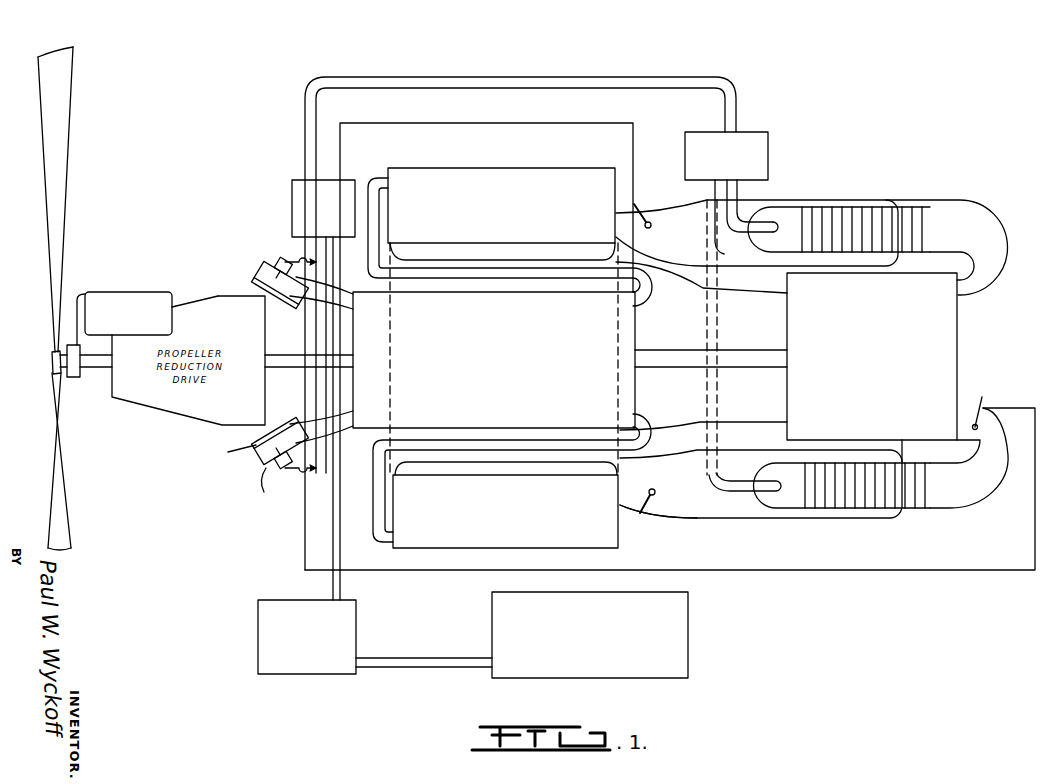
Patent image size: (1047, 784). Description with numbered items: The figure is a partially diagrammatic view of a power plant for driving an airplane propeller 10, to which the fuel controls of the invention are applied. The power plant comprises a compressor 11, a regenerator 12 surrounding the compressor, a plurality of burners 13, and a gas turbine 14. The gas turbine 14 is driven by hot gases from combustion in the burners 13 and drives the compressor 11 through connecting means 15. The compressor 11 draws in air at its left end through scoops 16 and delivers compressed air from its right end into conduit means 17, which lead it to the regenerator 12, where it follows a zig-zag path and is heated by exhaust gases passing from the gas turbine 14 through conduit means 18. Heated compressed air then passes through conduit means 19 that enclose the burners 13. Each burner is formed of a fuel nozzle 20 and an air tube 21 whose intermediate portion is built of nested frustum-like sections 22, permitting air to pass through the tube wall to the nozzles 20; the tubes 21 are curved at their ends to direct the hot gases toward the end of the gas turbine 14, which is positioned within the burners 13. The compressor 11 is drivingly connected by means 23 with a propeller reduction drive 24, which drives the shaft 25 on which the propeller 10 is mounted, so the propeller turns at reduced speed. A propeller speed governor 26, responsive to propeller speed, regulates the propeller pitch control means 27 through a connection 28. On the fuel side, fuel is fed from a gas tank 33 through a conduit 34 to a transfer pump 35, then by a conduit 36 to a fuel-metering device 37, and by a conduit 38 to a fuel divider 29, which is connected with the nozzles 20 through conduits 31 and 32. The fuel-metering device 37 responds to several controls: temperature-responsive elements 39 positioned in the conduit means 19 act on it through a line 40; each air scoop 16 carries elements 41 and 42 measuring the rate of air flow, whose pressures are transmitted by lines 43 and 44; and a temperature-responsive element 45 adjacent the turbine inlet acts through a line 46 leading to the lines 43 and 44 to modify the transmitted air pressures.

The airplane propeller 10 is at (55, 425).
The compressor 11 is at (636, 327).
The regenerator 12 is at (534, 168).
The burners 13 is at (812, 360).
The gas turbine 14 is at (958, 318).
The connecting means 15 is at (742, 369).
The air scoops 16 is at (262, 275).
The conduit means 17 is at (648, 303).
The conduit means 18 is at (747, 291).
The conduit means 19 is at (700, 517).
The fuel nozzle 20 is at (769, 481).
The air tube 21 is at (811, 509).
The nested frustum-like sections 22 is at (866, 509).
The drive means 23 is at (352, 349).
The propeller reduction drive 24 is at (200, 299).
The propeller shaft 25 is at (112, 372).
The propeller speed governor 26 is at (148, 276).
The propeller pitch control means 27 is at (77, 378).
The connection 28 is at (77, 296).
The fuel divider 29 is at (760, 132).
The conduit 31 is at (722, 343).
The conduit 32 is at (723, 254).
The gas tank 33 is at (600, 678).
The conduit 34 is at (452, 668).
The transfer pump 35 is at (350, 674).
The conduit 36 is at (341, 552).
The fuel-metering device 37 is at (292, 185).
The conduit 38 is at (470, 77).
The temperature-responsive elements 39 is at (655, 224).
The control line 40 is at (485, 123).
The air flow measuring element 41 is at (271, 488).
The air flow measuring element 42 is at (230, 456).
The pressure line 43 is at (312, 383).
The pressure line 44 is at (313, 372).
The temperature-responsive element 45 is at (983, 404).
The line 46 is at (305, 540).